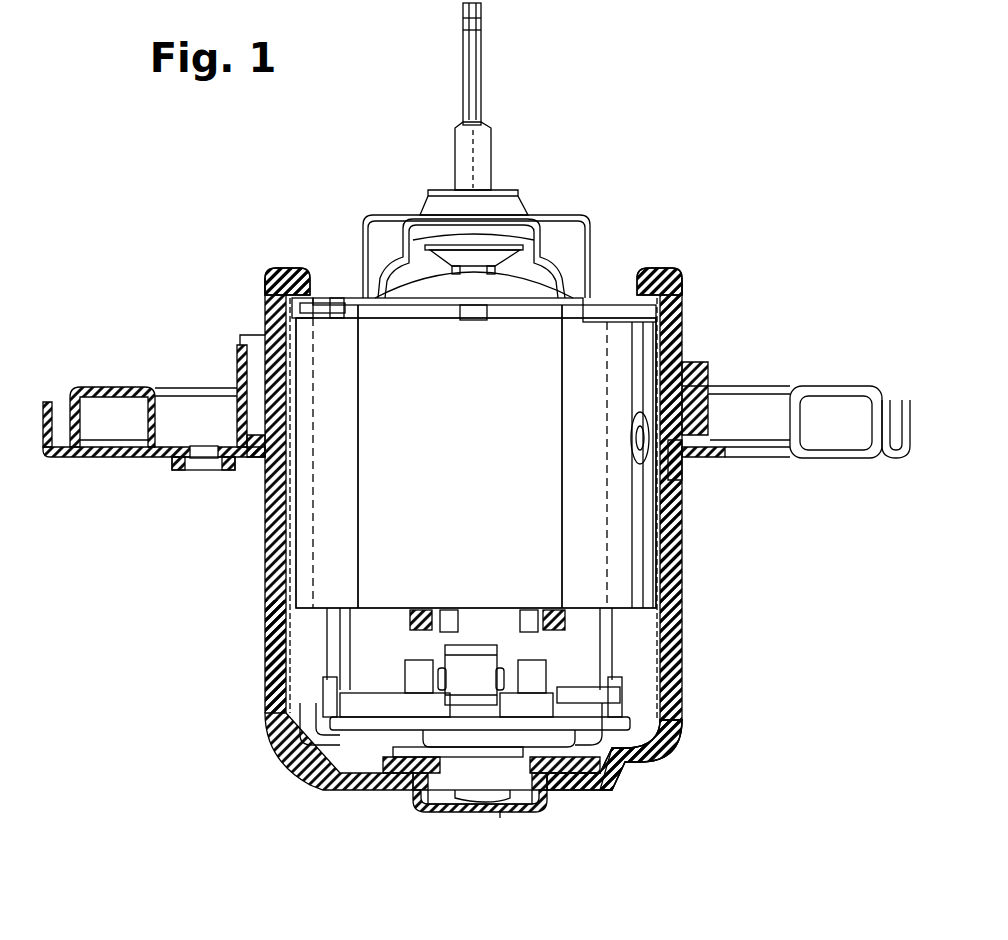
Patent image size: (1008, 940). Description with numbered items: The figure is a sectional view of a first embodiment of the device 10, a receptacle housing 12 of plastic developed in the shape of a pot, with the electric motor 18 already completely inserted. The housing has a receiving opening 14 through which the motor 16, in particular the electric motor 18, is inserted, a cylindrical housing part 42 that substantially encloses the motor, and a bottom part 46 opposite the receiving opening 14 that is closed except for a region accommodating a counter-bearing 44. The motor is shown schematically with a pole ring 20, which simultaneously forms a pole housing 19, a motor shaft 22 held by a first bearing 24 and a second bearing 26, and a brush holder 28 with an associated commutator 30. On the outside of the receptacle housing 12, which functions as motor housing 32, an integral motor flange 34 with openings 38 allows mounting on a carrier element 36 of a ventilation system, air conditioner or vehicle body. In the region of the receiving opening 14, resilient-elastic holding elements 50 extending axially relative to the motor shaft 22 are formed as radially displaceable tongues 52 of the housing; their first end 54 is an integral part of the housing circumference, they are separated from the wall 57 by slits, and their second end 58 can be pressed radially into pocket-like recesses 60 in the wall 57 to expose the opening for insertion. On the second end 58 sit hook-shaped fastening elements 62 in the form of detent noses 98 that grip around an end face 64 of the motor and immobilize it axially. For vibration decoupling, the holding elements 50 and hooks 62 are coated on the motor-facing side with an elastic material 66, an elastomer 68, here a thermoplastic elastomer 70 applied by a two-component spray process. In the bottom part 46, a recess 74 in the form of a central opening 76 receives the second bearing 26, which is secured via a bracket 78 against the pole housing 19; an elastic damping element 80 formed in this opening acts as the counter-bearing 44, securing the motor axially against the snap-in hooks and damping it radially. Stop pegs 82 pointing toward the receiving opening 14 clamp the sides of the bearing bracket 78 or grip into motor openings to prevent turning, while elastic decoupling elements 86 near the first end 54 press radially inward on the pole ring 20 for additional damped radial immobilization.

The device 10 is at (258, 775).
The receptacle housing 12 is at (682, 665).
The receiving opening 14 is at (619, 275).
The motor 16 is at (582, 636).
The electric motor 18 is at (582, 636).
The pole housing 19 is at (640, 552).
The pole ring 20 is at (640, 552).
The motor shaft 22 is at (482, 72).
The first bearing 24 is at (516, 218).
The second bearing 26 is at (420, 802).
The brush holder 28 is at (410, 680).
The commutator 30 is at (440, 637).
The motor housing 32 is at (682, 665).
The motor flange 34 is at (122, 432).
The carrier element 36 is at (226, 465).
The openings 38 is at (197, 447).
The cylindrical housing part 42 is at (268, 575).
The counter-bearing 44 is at (558, 792).
The bottom part 46 is at (590, 792).
The resilient-elastic holding elements 50 is at (270, 322).
The tongues 52 is at (680, 322).
The first end 54 is at (690, 460).
The wall 57 is at (270, 537).
The second end 58 is at (265, 275).
The pocket-like recesses 60 is at (700, 390).
The hook-shaped fastening elements 62 is at (290, 268).
The end face 64 is at (340, 292).
The elastic material 66 is at (268, 620).
The elastomer 68 is at (268, 620).
The thermoplastic elastomer 70 is at (268, 620).
The recess 74 is at (448, 806).
The central opening 76 is at (500, 820).
The bracket 78 is at (320, 777).
The elastic damping element 80 is at (385, 786).
The stop pegs 82 is at (590, 733).
The elastic decoupling elements 86 is at (262, 430).
The detent noses 98 is at (672, 276).